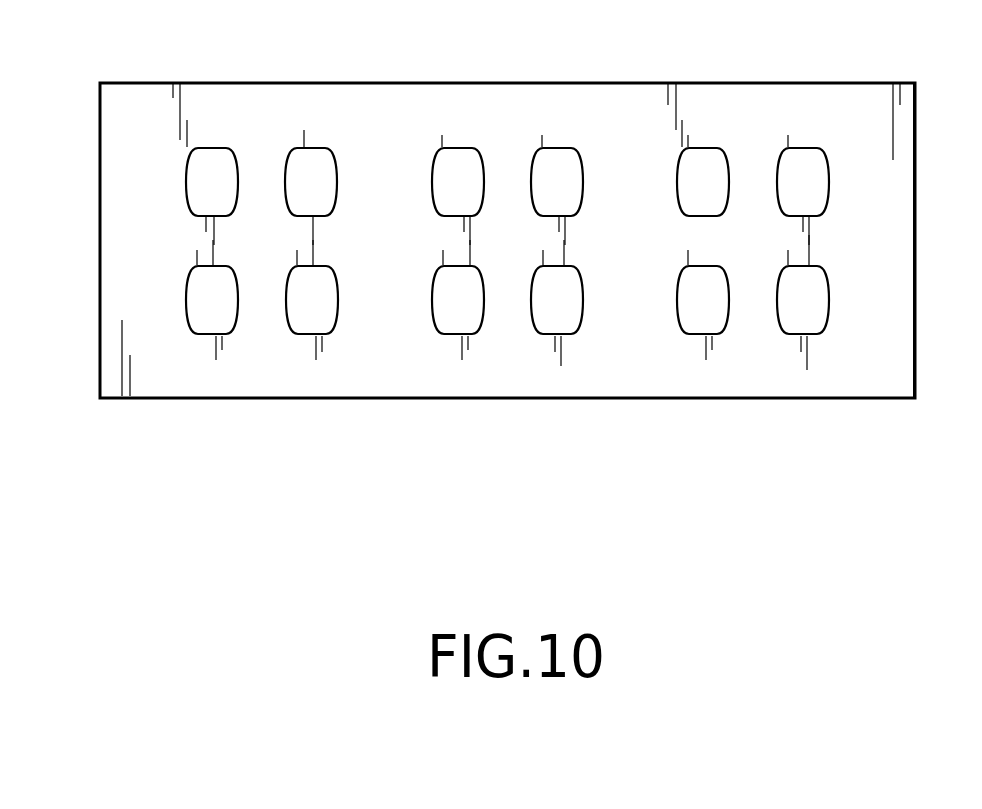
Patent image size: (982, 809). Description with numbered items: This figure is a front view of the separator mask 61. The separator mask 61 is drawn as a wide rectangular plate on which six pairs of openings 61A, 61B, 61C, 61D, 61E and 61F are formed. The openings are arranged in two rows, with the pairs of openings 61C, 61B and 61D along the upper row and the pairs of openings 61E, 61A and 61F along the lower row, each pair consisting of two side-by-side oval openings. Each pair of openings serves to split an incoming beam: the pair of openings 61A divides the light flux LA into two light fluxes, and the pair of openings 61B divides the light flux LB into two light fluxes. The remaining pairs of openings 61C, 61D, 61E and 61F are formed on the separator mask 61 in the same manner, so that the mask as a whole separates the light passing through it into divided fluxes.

The separator mask 61 is at (107, 212).
The pair of openings 61A is at (547, 334).
The pair of openings 61B is at (468, 148).
The pair of openings 61C is at (222, 148).
The pair of openings 61D is at (712, 148).
The pair of openings 61E is at (297, 334).
The pair of openings 61F is at (790, 334).